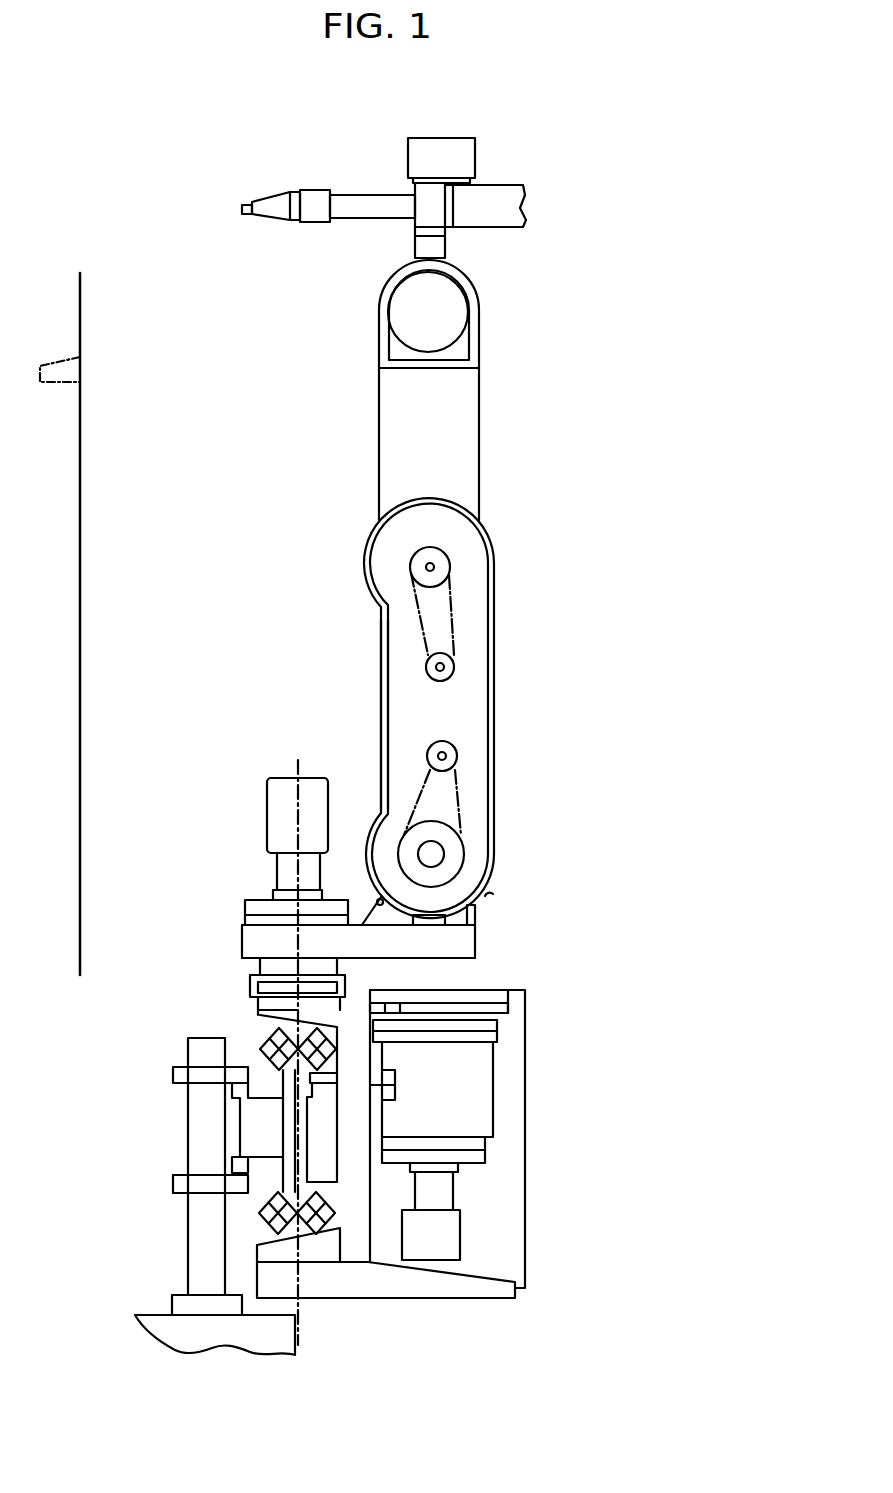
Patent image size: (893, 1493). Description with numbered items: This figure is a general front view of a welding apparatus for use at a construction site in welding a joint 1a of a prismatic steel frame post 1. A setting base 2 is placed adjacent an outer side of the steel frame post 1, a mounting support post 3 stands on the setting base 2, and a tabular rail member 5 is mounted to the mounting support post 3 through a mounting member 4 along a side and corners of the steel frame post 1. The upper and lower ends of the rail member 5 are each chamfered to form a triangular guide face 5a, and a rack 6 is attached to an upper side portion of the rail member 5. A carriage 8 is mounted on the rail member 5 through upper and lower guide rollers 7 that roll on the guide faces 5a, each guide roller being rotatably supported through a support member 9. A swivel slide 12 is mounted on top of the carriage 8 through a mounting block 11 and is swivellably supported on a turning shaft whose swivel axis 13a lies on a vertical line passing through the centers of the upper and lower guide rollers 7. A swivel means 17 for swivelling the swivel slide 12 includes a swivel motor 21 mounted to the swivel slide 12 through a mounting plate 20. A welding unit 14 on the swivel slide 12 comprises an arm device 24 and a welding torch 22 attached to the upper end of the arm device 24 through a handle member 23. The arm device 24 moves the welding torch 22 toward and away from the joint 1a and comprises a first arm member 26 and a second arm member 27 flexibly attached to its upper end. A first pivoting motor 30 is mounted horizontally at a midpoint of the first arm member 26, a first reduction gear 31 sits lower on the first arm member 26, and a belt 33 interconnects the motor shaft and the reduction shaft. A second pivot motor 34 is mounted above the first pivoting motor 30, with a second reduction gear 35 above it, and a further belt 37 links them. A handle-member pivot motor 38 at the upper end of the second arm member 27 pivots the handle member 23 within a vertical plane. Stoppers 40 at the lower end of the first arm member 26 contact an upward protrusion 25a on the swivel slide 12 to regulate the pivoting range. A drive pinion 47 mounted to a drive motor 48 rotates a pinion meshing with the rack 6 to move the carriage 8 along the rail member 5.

The steel frame post 1 is at (82, 400).
The joint 1a is at (72, 372).
The setting base 2 is at (283, 1338).
The mounting support post 3 is at (208, 1242).
The mounting member 4 is at (243, 1130).
The rail member 5 is at (240, 1168).
The guide face 5a is at (212, 1075).
The rack 6 is at (334, 1085).
The guide roller 7 is at (268, 1040).
The carriage 8 is at (448, 1285).
The support member 9 is at (312, 1025).
The mounting block 11 is at (262, 985).
The swivel slide 12 is at (440, 927).
The swivel axis 13a is at (298, 832).
The welding unit 14 is at (497, 440).
The swivel means 17 is at (234, 933).
The mounting plate 20 is at (258, 903).
The swivel motor 21 is at (284, 790).
The welding torch 22 is at (278, 222).
The handle member 23 is at (466, 157).
The arm device 24 is at (500, 608).
The upward protrusion 25a is at (440, 958).
The first arm member 26 is at (384, 738).
The second arm member 27 is at (465, 410).
The first pivoting motor 30 is at (450, 750).
The first reduction gear 31 is at (455, 852).
The belt 33 is at (462, 781).
The second pivot motor 34 is at (450, 664).
The second reduction gear 35 is at (437, 564).
The upper belt 37 is at (420, 633).
The handle-member pivot motor 38 is at (452, 310).
The stopper 40 is at (493, 893).
The drive pinion 47 is at (396, 1088).
The drive motor 48 is at (445, 1235).